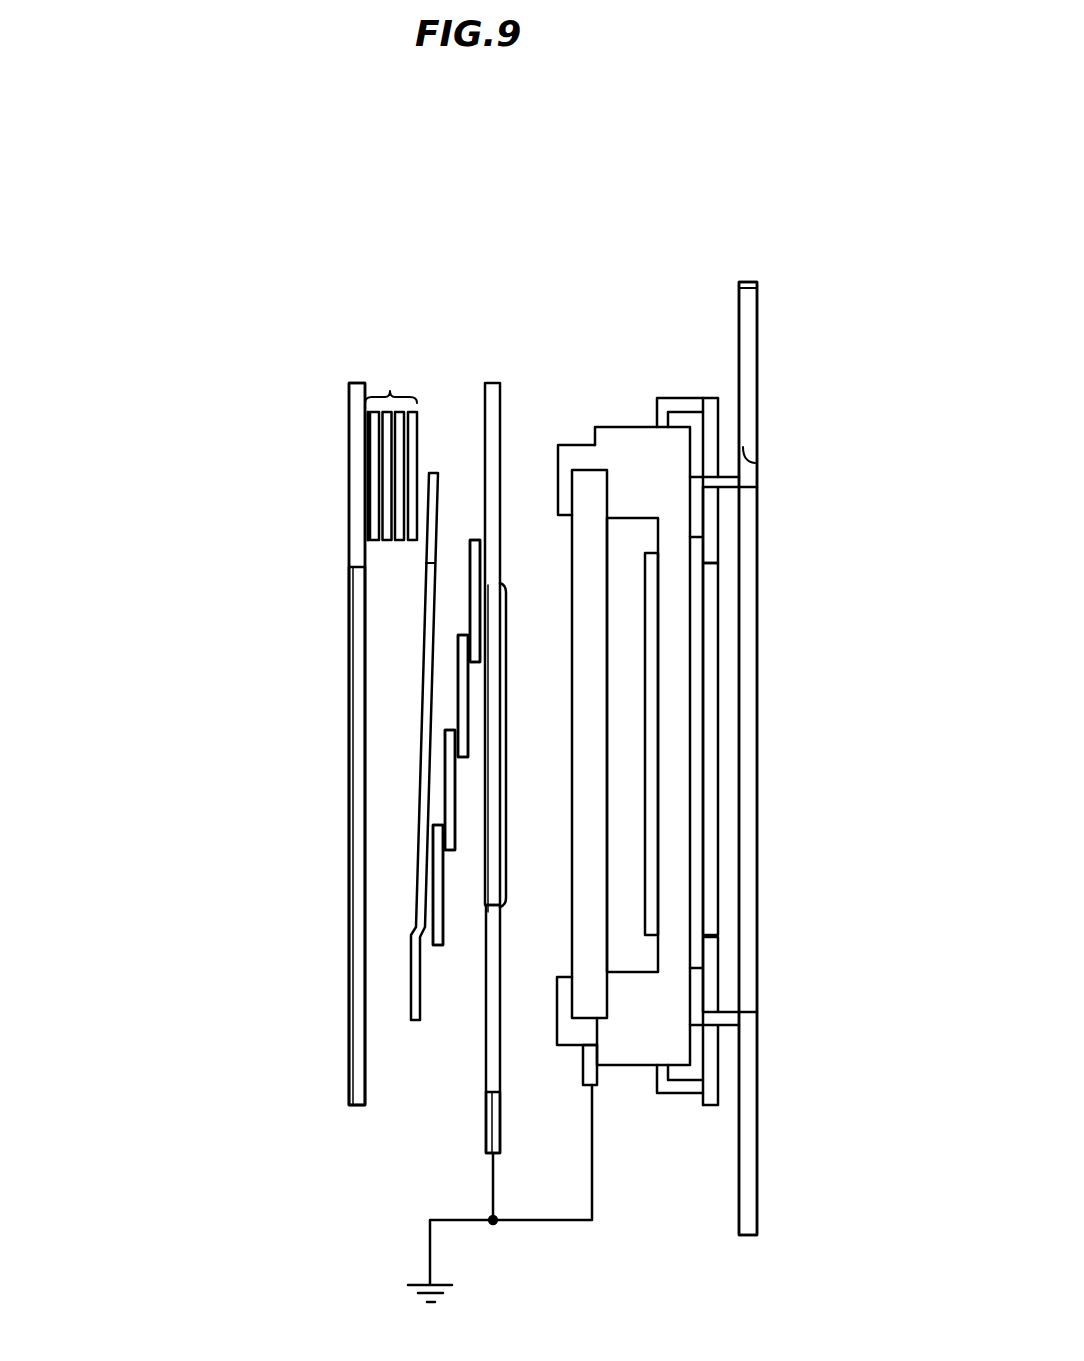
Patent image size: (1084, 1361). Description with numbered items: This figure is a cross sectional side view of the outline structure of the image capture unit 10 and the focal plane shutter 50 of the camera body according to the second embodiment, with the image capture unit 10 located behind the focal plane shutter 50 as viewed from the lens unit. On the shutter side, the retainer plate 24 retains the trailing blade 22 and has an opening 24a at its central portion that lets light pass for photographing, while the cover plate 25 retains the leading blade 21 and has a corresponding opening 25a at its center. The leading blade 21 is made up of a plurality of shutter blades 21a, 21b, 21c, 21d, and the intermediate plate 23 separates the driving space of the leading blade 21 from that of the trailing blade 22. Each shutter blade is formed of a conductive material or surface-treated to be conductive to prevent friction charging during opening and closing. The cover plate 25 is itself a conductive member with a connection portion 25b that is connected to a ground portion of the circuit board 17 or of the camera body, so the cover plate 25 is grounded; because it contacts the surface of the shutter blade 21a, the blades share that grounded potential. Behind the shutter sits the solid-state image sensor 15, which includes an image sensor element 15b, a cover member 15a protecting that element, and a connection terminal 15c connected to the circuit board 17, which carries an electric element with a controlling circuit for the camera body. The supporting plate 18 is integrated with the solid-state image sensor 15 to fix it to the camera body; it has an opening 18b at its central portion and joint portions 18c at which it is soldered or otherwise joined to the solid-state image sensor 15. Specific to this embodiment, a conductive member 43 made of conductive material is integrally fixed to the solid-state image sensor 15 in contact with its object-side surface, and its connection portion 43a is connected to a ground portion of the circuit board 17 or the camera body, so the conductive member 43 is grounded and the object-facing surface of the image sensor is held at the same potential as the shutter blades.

The image capture unit 10 is at (812, 180).
The focal plane shutter 50 is at (135, 276).
The retainer plate 24 is at (355, 383).
The opening 24a is at (348, 572).
The trailing blade 22 is at (390, 391).
The intermediate plate 23 is at (410, 993).
The leading blade 21 is at (170, 560).
The shutter blade 21a is at (470, 598).
The shutter blade 21b is at (458, 690).
The shutter blade 21c is at (445, 778).
The shutter blade 21d is at (433, 888).
The cover plate 25 is at (492, 383).
The opening 25a is at (500, 907).
The connection portion 25b is at (492, 1133).
The supporting plate 18 is at (757, 353).
The opening 18b is at (757, 470).
The joint portions 18c is at (700, 513).
The circuit board 17 is at (710, 680).
The solid-state image sensor 15 is at (625, 442).
The cover member 15a is at (593, 978).
The image sensor element 15b is at (658, 897).
The connection terminal 15c is at (683, 398).
The conductive member 43 is at (574, 455).
The connection portion 43a is at (600, 1073).